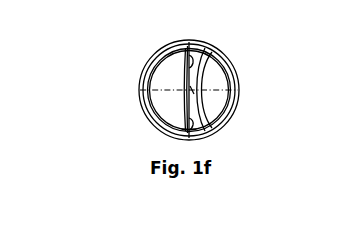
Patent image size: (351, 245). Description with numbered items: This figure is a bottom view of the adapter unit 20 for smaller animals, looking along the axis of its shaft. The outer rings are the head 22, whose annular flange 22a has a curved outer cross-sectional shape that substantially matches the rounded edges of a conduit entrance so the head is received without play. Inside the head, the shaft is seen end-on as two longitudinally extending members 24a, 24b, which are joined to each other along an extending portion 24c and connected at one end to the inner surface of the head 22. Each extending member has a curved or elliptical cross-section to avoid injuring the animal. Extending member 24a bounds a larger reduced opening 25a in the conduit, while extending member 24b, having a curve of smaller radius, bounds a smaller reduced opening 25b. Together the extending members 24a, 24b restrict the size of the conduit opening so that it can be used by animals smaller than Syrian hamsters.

The adapter unit 20 is at (250, 100).
The head 22 is at (169, 71).
The flange 22a is at (140, 78).
The extending member 24a is at (115, 90).
The extending member 24b is at (247, 46).
The extending portion 24c is at (248, 104).
The larger reduced opening 25a is at (123, 89).
The smaller reduced opening 25b is at (254, 89).